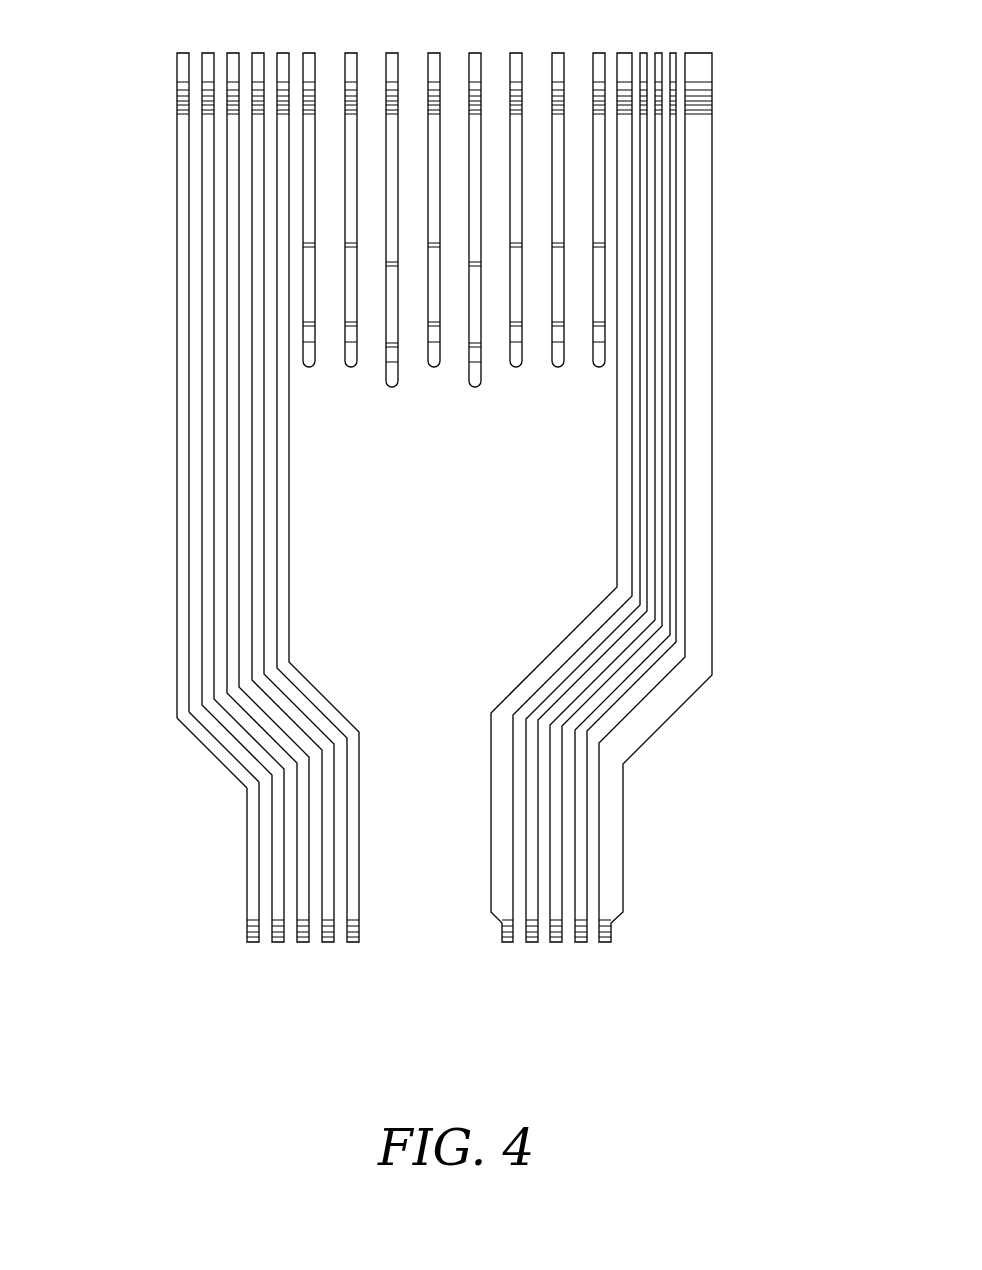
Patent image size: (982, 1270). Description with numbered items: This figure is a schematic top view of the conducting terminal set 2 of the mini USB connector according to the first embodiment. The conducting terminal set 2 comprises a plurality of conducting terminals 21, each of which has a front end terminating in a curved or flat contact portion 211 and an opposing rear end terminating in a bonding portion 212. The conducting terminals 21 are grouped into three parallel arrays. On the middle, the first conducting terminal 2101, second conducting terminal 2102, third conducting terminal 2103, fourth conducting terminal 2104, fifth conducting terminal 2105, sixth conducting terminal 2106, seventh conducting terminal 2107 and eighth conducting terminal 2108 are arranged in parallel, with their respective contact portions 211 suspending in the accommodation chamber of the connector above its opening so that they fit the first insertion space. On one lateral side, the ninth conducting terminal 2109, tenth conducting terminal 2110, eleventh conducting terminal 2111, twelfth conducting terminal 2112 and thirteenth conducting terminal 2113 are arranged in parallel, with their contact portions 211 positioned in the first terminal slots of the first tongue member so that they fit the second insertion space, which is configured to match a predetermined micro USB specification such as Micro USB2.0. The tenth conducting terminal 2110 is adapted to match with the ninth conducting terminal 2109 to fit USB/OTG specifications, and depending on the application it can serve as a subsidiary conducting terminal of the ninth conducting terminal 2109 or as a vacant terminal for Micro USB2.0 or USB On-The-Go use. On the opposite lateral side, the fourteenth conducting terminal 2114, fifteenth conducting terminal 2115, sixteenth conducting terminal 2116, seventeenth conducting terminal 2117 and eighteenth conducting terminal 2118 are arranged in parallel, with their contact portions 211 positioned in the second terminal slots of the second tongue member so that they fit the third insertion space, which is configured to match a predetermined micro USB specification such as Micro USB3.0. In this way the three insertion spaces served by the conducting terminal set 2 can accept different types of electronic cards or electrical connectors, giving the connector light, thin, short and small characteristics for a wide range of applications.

The conducting terminal set 2 is at (102, 504).
The conducting terminal 21 is at (183, 508).
The contact portion 211 is at (255, 798).
The bonding portion 212 is at (517, 62).
The 1st conducting terminal 2101 is at (310, 295).
The 2nd conducting terminal 2102 is at (352, 270).
The 3rd conducting terminal 2103 is at (392, 237).
The 4th conducting terminal 2104 is at (433, 215).
The 5th conducting terminal 2105 is at (478, 213).
The 6th conducting terminal 2106 is at (517, 235).
The 7th conducting terminal 2107 is at (560, 269).
The 8th conducting terminal 2108 is at (600, 295).
The 9th conducting terminal 2109 is at (502, 763).
The 10th conducting terminal 2110 is at (535, 802).
The 11th conducting terminal 2111 is at (543, 823).
The 12th conducting terminal 2112 is at (580, 853).
The 13th conducting terminal 2113 is at (612, 886).
The 14th conducting terminal 2114 is at (353, 844).
The 15th conducting terminal 2115 is at (326, 878).
The 16th conducting terminal 2116 is at (316, 823).
The 17th conducting terminal 2117 is at (278, 853).
The 18th conducting terminal 2118 is at (255, 885).